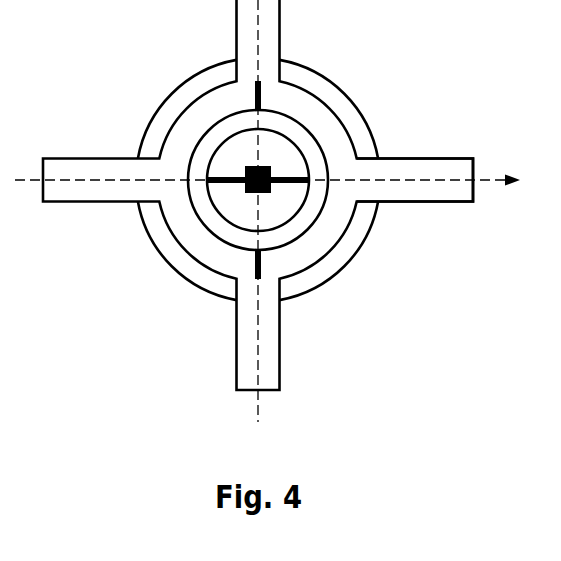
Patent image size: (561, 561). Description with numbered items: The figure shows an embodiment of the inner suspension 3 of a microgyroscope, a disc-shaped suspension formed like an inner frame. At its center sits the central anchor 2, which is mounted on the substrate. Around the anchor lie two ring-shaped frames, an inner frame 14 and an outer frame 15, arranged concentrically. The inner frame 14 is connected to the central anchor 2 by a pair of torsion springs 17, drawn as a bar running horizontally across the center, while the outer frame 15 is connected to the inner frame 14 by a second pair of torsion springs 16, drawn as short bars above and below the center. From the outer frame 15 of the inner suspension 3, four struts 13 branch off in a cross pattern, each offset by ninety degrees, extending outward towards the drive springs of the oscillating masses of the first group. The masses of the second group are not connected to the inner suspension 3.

The central anchor 2 is at (247, 167).
The inner suspension 3 is at (261, 195).
The struts 13 is at (433, 170).
The inner frame 14 is at (300, 140).
The outer frame 15 is at (363, 222).
The torsion springs 16 is at (262, 91).
The torsion springs 17 is at (289, 184).